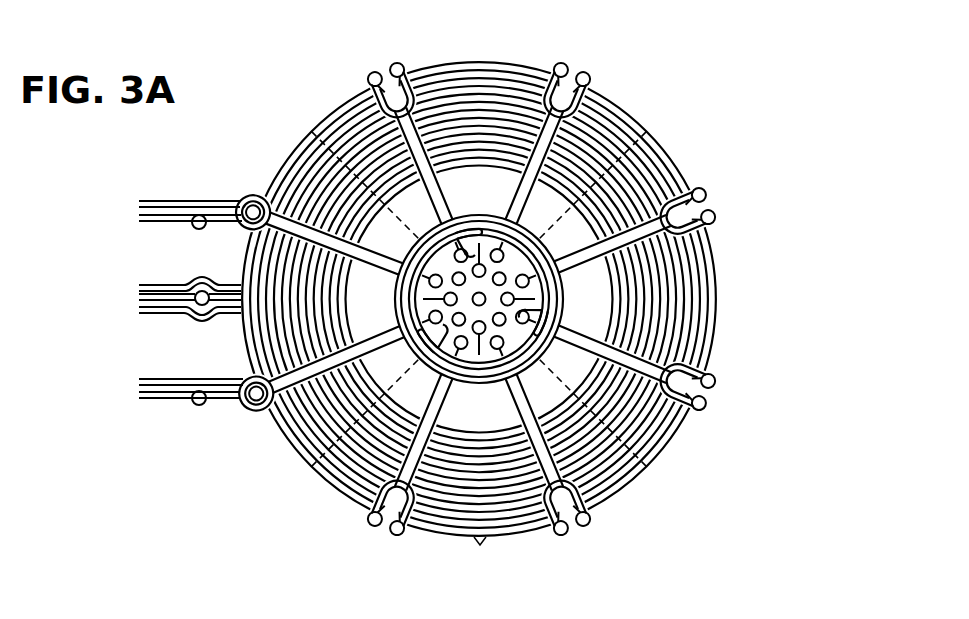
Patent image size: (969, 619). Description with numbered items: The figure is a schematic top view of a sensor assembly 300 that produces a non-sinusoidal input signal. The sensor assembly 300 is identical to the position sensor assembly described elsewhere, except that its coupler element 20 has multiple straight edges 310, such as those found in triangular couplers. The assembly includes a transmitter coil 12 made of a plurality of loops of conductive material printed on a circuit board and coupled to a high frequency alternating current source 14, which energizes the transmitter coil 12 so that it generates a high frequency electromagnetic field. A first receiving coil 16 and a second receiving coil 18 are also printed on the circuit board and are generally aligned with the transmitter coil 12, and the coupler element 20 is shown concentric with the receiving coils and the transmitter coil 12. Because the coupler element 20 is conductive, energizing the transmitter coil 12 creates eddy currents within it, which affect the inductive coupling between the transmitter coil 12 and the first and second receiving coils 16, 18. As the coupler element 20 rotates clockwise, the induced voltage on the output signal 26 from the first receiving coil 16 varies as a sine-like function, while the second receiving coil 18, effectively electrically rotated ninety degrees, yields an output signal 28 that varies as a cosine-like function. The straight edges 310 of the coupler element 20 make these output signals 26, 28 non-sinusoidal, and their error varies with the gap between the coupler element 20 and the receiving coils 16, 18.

The sensor assembly 300 is at (788, 103).
The straight edges 310 is at (485, 289).
The transmitter coil 12 is at (546, 299).
The first receiving coil 16 is at (579, 305).
The second receiving coil 18 is at (318, 364).
The coupler element 20 is at (479, 282).
The output signal 26 is at (182, 200).
The high frequency alternating current source 14 is at (138, 301).
The output signal 28 is at (160, 397).